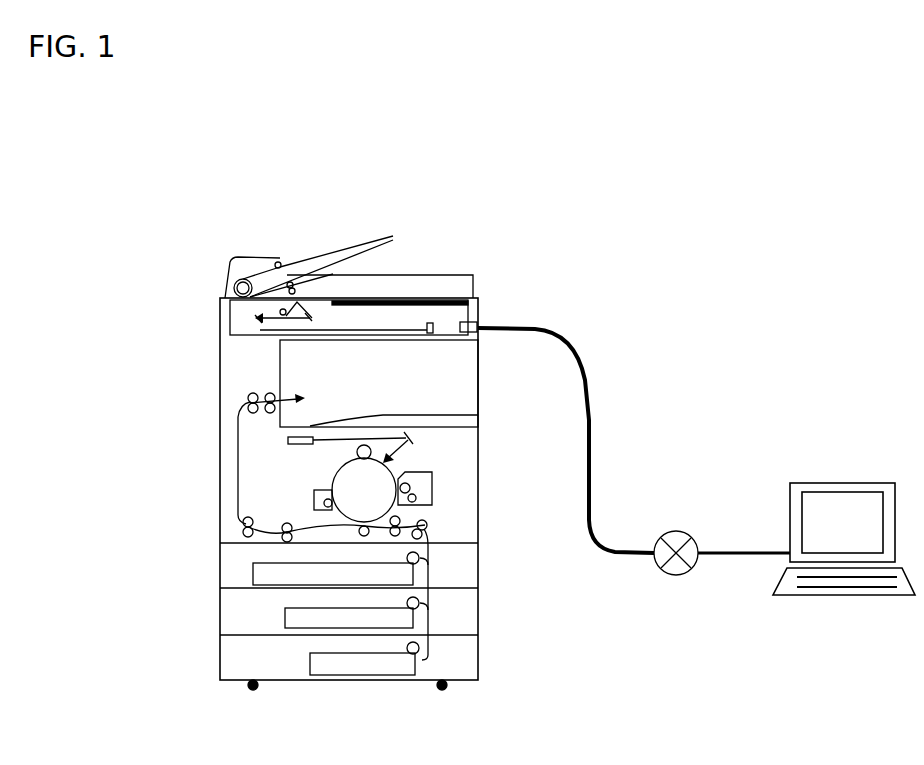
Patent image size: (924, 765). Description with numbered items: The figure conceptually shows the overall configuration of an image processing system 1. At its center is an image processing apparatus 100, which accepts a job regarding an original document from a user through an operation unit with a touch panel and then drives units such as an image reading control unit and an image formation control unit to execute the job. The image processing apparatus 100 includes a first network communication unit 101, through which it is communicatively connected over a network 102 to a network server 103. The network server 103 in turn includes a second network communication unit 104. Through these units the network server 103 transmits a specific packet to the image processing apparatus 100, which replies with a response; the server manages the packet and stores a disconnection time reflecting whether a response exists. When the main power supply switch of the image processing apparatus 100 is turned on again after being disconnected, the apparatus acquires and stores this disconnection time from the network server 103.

The image processing system 1 is at (669, 293).
The image processing apparatus 100 is at (305, 236).
The first network communication unit 101 is at (477, 322).
The network 102 is at (671, 576).
The network server 103 is at (843, 592).
The second network communication unit 104 is at (788, 552).